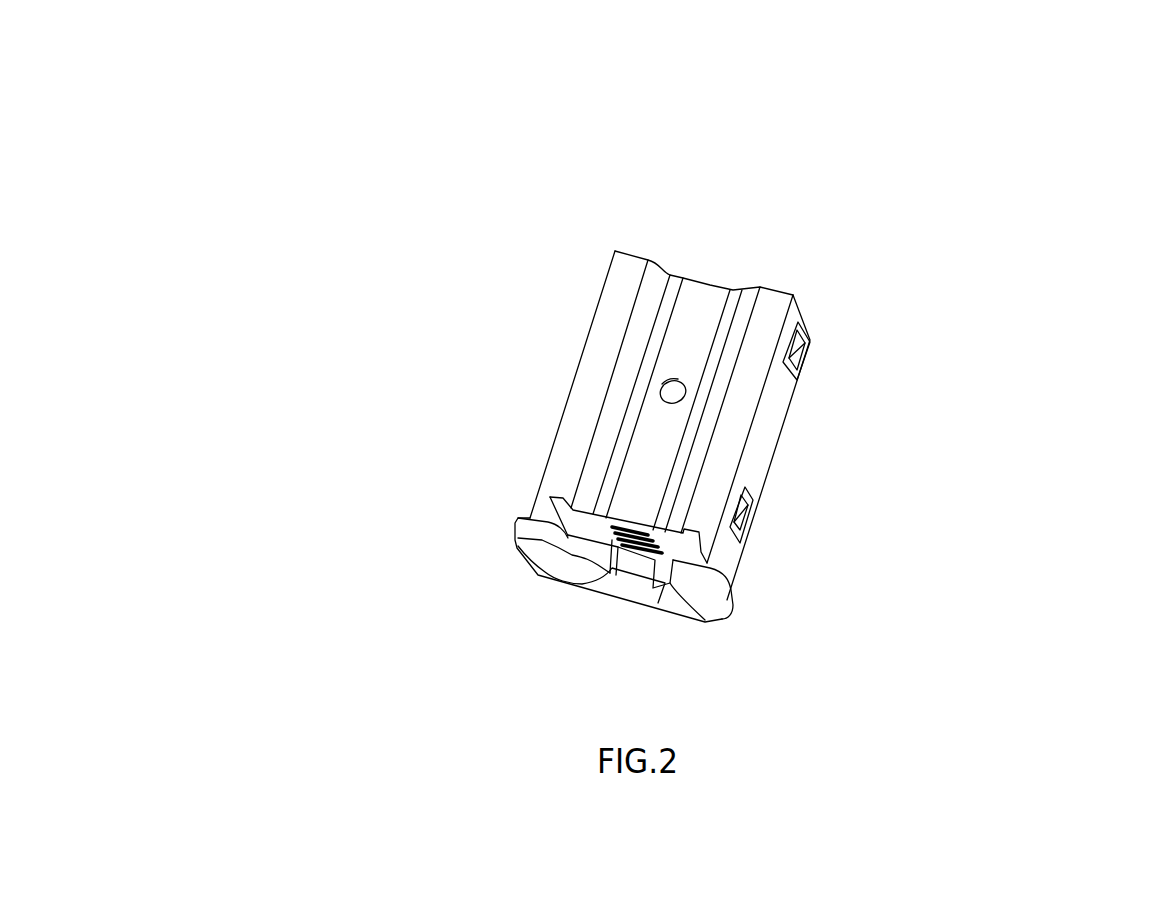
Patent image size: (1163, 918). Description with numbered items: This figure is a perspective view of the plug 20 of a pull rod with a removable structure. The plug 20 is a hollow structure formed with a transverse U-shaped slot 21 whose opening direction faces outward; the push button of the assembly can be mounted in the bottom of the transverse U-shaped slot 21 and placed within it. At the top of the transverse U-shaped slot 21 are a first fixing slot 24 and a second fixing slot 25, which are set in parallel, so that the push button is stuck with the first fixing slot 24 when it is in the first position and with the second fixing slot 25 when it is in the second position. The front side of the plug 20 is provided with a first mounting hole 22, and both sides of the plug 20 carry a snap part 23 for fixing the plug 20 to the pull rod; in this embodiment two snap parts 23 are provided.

The plug 20 is at (398, 115).
The transverse U-shaped slot 21 is at (622, 562).
The first mounting hole 22 is at (667, 388).
The snap part 23 is at (810, 336).
The first fixing slot 24 is at (730, 617).
The second fixing slot 25 is at (645, 527).